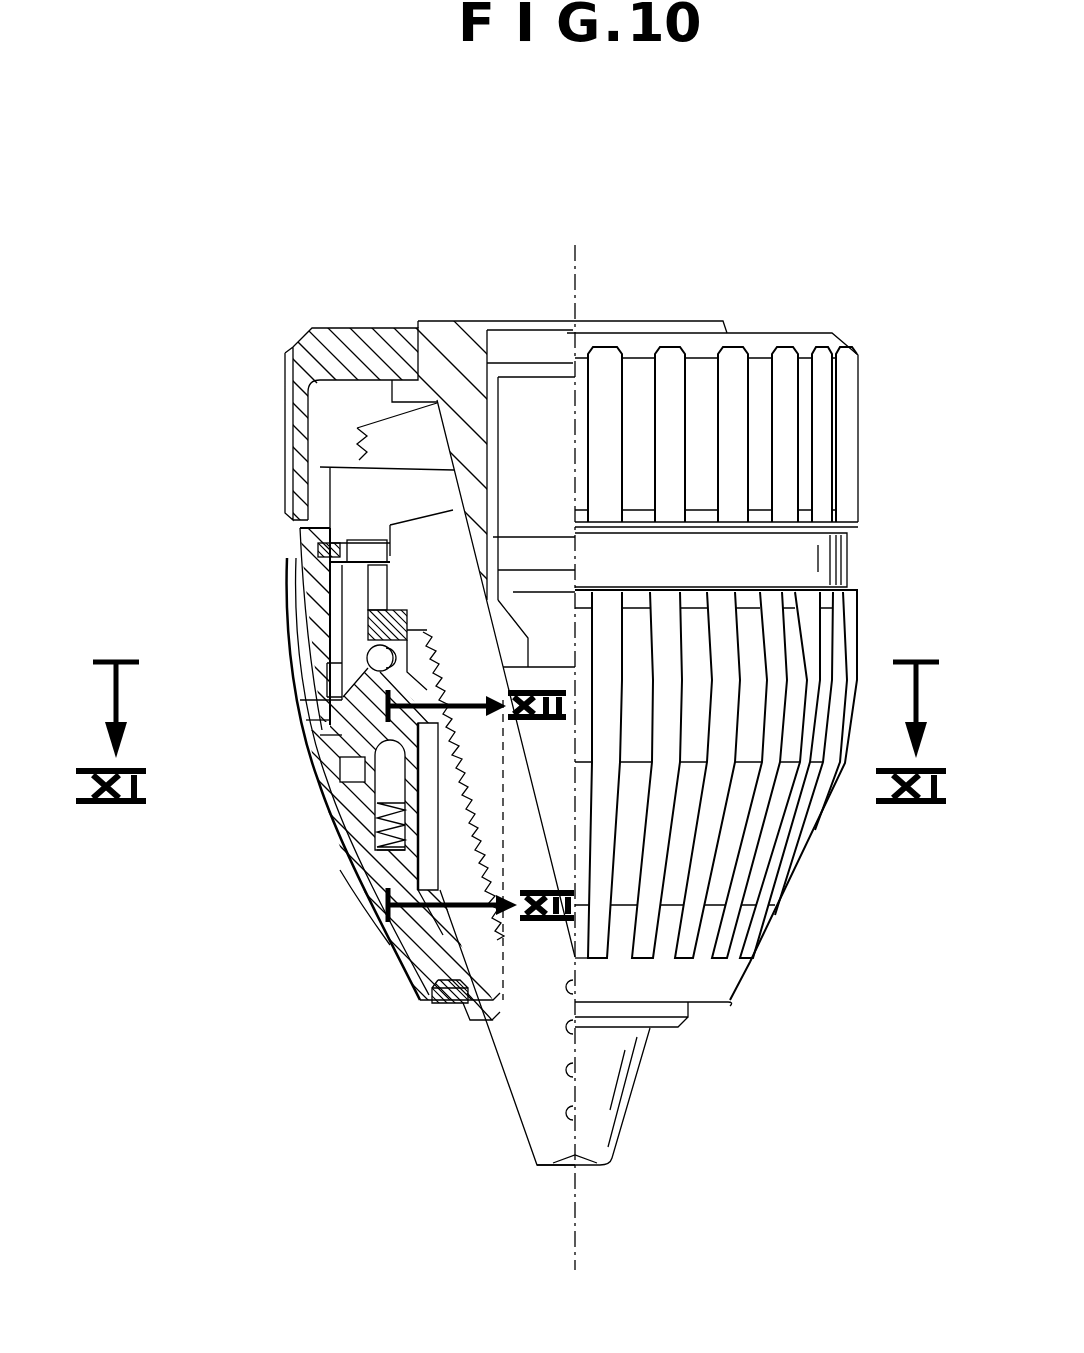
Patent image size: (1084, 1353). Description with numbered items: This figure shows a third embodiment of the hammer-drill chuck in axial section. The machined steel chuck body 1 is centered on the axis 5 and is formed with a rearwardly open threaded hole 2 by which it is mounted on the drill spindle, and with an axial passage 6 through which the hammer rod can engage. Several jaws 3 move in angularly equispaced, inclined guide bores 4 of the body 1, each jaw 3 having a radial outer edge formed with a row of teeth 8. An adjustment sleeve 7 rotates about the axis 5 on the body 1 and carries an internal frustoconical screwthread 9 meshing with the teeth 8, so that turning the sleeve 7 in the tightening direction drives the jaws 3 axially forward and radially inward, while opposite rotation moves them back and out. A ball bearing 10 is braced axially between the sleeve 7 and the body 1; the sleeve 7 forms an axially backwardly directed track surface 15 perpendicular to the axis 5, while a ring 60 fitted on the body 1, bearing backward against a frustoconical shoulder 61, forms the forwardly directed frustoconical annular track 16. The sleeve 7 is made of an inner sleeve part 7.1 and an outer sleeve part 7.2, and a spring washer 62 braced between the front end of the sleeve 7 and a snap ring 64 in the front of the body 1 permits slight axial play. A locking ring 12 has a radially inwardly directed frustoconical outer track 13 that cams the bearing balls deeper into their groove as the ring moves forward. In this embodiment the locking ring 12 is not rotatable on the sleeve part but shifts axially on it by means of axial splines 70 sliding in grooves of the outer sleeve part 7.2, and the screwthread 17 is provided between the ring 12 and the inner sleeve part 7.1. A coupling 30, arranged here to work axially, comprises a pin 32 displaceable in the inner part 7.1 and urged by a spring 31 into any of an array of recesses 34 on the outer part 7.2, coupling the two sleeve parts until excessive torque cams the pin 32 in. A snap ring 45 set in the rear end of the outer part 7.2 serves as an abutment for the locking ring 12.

The chuck body 1 is at (452, 373).
The threaded hole 2 is at (535, 397).
The jaw 3 is at (547, 1097).
The guide bore 4 is at (465, 598).
The axis 5 is at (578, 300).
The axial passage 6 is at (563, 633).
The adjustment sleeve 7 is at (865, 596).
The inner sleeve part 7.1 is at (340, 747).
The outer sleeve part 7.2 is at (345, 897).
The teeth 8 is at (497, 868).
The frustoconical screwthread 9 is at (440, 660).
The ball bearing 10 is at (340, 643).
The locking ring 12 is at (322, 547).
The outer track 13 is at (340, 666).
The track surface 15 is at (340, 688).
The annular track 16 is at (340, 620).
The screwthread 17 is at (340, 712).
The coupling 30 is at (350, 818).
The spring 31 is at (345, 868).
The pin 32 is at (390, 760).
The recesses 34 is at (340, 777).
The snap ring 45 is at (298, 548).
The ring 60 is at (340, 596).
The shoulder 61 is at (395, 570).
The spring washer 62 is at (473, 973).
The snap ring 64 is at (460, 1025).
The splines 70 is at (330, 580).